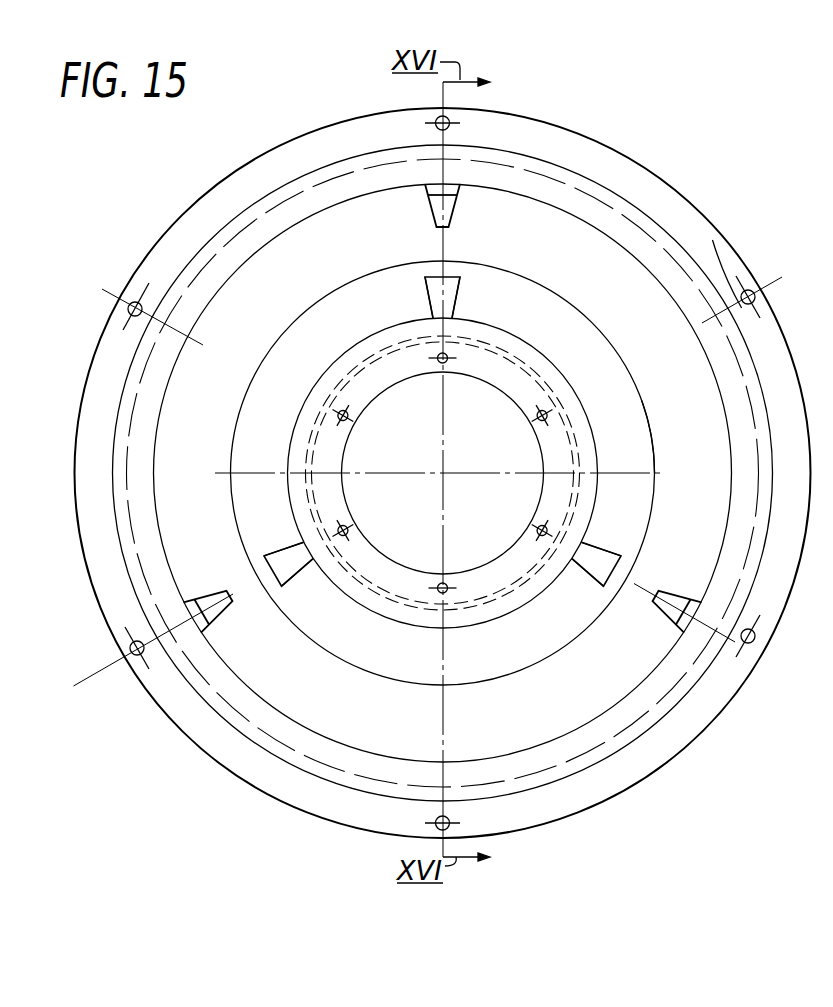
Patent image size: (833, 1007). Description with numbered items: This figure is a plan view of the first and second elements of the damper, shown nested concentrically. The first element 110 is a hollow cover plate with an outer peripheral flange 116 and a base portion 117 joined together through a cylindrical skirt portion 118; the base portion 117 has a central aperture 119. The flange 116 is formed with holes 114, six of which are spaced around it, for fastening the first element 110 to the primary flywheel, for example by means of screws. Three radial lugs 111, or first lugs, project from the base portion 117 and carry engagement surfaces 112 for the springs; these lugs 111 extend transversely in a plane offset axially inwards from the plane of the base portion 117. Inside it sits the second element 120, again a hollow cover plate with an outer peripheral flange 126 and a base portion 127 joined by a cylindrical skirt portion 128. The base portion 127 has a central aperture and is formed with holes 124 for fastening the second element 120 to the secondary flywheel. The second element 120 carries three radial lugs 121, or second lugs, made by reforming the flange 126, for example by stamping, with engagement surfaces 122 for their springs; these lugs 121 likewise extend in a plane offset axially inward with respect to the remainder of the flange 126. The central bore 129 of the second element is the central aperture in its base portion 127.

The first element 110 is at (677, 181).
The radial lugs 111 is at (450, 222).
The engagement surfaces 112 is at (435, 205).
The holes 114 is at (440, 116).
The outer peripheral flange 116 is at (728, 262).
The base portion 117 is at (692, 262).
The cylindrical skirt portion 118 is at (680, 236).
The central aperture 119 is at (632, 272).
The second element 120 is at (649, 409).
The radial lugs 121 is at (456, 288).
The engagement surfaces 122 is at (432, 300).
The holes 124 is at (440, 362).
The outer peripheral flange 126 is at (646, 462).
The base portion 127 is at (560, 448).
The cylindrical skirt portion 128 is at (568, 372).
The central bore 129 is at (543, 497).